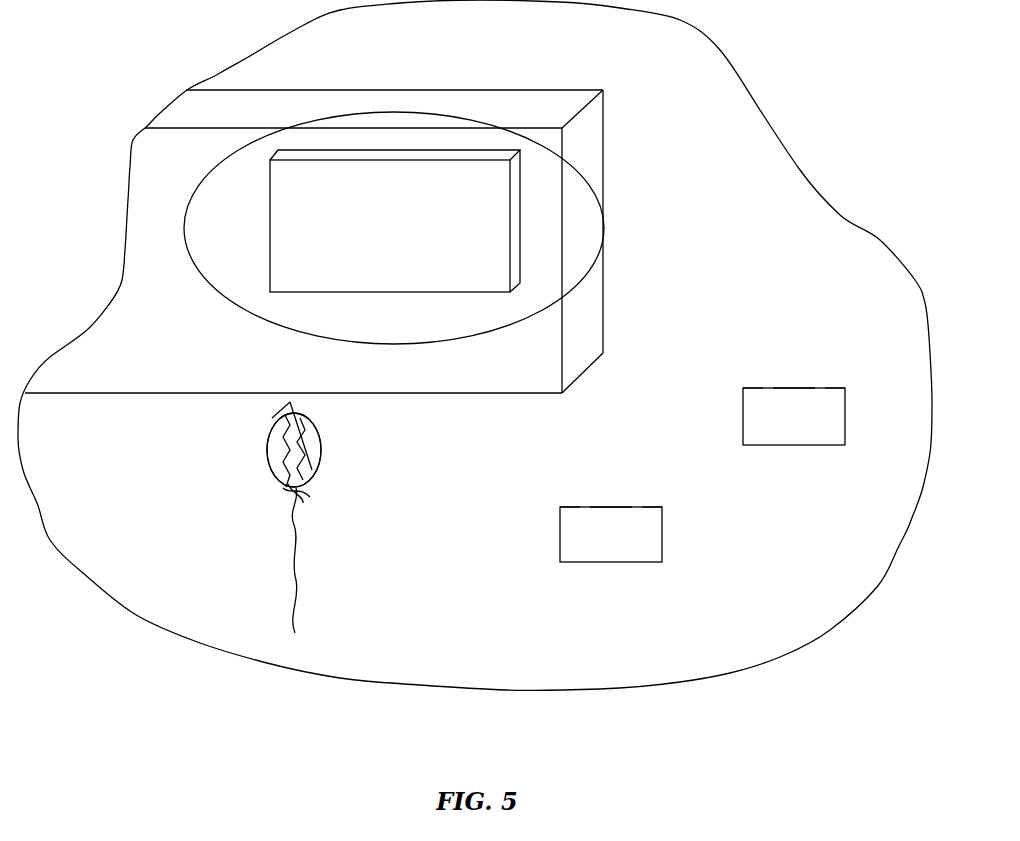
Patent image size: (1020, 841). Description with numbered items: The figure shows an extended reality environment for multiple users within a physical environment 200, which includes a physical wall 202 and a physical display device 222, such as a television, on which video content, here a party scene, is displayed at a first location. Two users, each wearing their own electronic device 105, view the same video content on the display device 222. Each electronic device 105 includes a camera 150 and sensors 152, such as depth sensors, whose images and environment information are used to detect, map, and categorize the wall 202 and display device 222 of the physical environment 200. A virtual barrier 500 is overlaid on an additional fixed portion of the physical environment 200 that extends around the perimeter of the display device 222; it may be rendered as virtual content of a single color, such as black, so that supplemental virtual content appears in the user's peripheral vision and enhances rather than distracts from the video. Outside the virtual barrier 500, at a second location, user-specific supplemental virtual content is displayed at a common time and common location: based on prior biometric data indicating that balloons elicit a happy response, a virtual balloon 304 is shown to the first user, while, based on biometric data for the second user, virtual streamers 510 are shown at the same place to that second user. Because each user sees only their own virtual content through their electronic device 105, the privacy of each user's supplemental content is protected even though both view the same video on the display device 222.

The electronic device 105 is at (608, 562).
The camera 150 is at (613, 507).
The sensors 152 is at (563, 507).
The physical environment 200 is at (638, 72).
The physical wall 202 is at (171, 166).
The display device 222 is at (520, 220).
The virtual balloon 304 is at (224, 436).
The virtual barrier 500 is at (385, 126).
The virtual streamers 510 is at (338, 426).